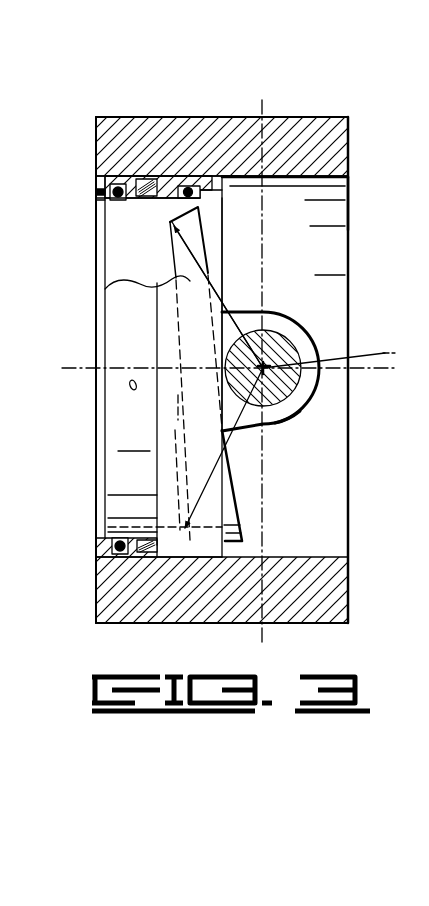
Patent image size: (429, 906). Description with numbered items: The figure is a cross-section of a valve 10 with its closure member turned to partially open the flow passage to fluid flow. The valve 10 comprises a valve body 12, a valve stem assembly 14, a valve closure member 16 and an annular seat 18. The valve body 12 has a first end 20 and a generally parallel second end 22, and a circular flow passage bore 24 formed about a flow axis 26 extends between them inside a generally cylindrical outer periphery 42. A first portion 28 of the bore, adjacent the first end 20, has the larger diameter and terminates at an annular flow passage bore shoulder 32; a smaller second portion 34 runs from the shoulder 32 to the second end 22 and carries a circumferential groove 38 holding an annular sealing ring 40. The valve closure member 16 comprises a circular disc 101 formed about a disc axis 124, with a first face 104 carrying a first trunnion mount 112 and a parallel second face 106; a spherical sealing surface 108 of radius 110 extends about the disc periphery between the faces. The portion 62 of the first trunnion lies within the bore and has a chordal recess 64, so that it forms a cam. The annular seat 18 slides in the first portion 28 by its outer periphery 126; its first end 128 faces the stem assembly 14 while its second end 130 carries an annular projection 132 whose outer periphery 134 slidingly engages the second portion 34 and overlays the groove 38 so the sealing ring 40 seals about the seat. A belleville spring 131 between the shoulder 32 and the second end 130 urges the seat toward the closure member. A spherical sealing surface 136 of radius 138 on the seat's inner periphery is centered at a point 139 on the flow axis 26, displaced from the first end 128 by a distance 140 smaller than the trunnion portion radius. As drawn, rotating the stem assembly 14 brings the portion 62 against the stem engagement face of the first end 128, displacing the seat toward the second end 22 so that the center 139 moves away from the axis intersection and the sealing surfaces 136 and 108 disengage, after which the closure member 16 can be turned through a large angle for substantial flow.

The valve 10 is at (303, 103).
The valve body 12 is at (341, 111).
The valve stem assembly 14 is at (293, 327).
The valve closure member 16 is at (171, 251).
The annular seat 18 is at (104, 489).
The first end 20 is at (350, 152).
The second end 22 is at (96, 134).
The flow passage bore 24 is at (318, 498).
The flow axis 26 is at (87, 371).
The first portion 28 is at (345, 183).
The flow passage bore shoulder 32 is at (143, 176).
The second portion 34 is at (98, 207).
The groove 38 is at (112, 190).
The annular sealing ring 40 is at (110, 184).
The outer periphery 42 is at (240, 119).
The portion of the first trunnion 62 is at (290, 352).
The recess 64 is at (180, 405).
The circular disc 101 is at (208, 232).
The first face 104 is at (224, 209).
The second face 106 is at (147, 288).
The sealing surface 108 is at (180, 218).
The radius 110 is at (233, 308).
The first trunnion mount 112 is at (321, 378).
The disc axis 124 is at (128, 388).
The outer periphery 126 is at (240, 125).
The first end 128 is at (287, 186).
The second end 130 is at (205, 176).
The belleville spring 131 is at (158, 178).
The annular projection 132 is at (148, 203).
The outer periphery 134 is at (100, 193).
The sealing surface 136 is at (222, 206).
The radius 138 is at (214, 463).
The center of curvature 139 is at (287, 411).
The distance 140 is at (233, 333).